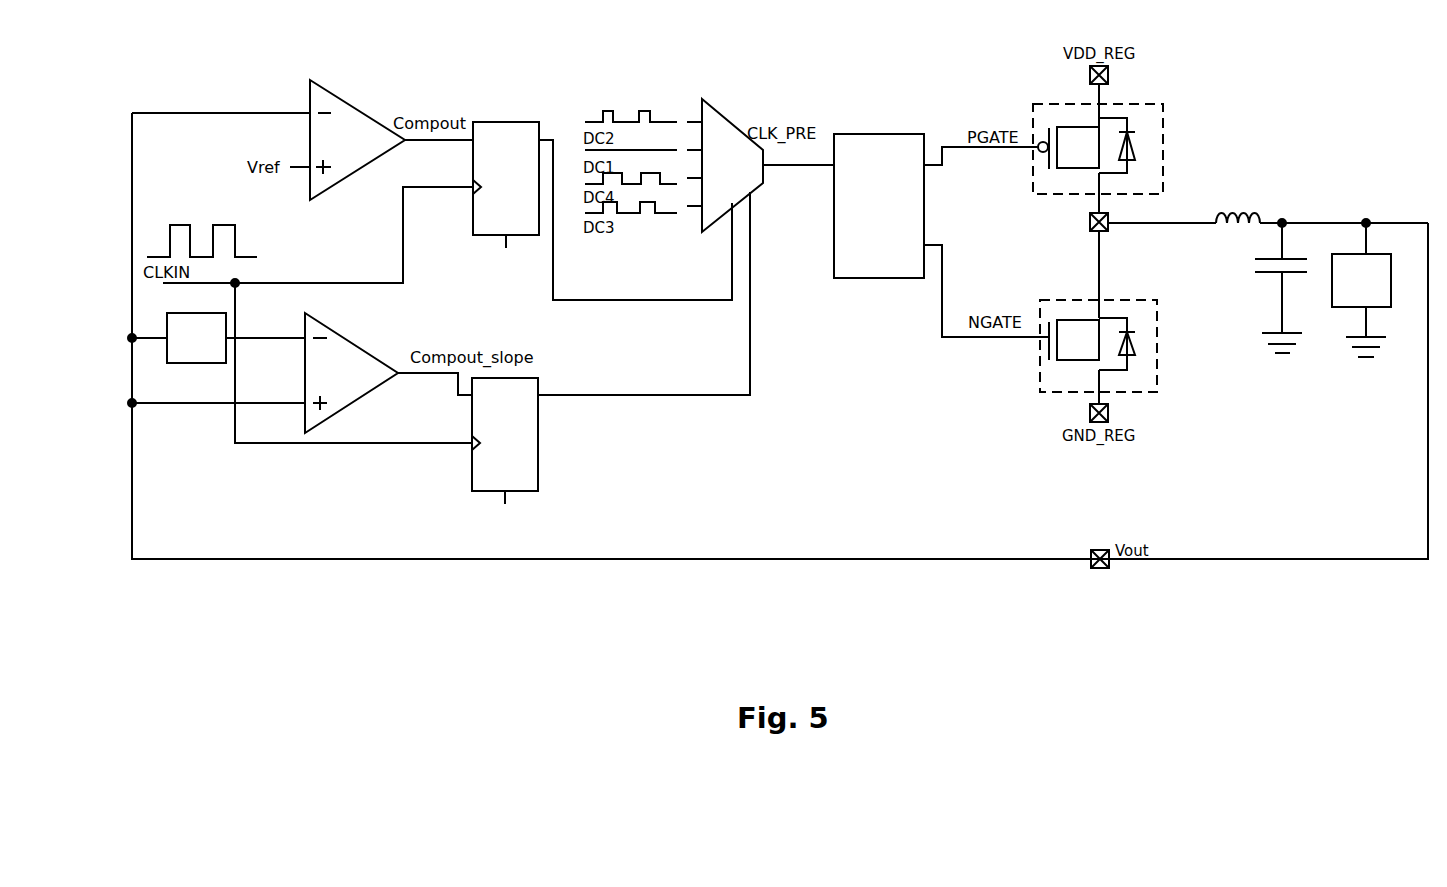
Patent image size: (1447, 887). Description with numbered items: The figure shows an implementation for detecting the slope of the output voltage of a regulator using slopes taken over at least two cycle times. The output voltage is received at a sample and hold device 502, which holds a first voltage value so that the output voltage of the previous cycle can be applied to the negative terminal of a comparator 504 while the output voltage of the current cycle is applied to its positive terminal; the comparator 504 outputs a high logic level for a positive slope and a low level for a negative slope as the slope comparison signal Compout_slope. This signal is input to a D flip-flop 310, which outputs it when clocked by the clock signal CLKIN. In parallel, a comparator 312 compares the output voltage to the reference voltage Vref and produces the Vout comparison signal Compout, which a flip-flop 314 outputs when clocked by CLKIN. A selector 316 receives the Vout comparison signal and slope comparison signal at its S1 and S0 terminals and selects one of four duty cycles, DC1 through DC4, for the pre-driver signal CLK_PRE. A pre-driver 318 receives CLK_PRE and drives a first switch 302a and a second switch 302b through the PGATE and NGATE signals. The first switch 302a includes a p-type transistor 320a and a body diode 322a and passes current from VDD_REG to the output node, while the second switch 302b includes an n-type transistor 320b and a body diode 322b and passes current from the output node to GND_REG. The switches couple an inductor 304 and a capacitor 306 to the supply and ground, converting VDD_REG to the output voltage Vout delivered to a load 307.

The comparator 312 is at (322, 80).
The flip-flop 314 is at (508, 121).
The selector 316 is at (708, 100).
The pre-driver 318 is at (884, 133).
The first switch 302a is at (1058, 96).
The p-type transistor 320a is at (1078, 127).
The body diode 322a is at (1163, 165).
The second switch 302b is at (1063, 298).
The n-type transistor 320b is at (1065, 362).
The body diode 322b is at (1130, 363).
The inductor 304 is at (1250, 205).
The capacitor 306 is at (1246, 269).
The load 307 is at (1381, 291).
The sample and hold device 502 is at (198, 363).
The comparator 504 is at (368, 343).
The flip-flop 310 is at (472, 480).